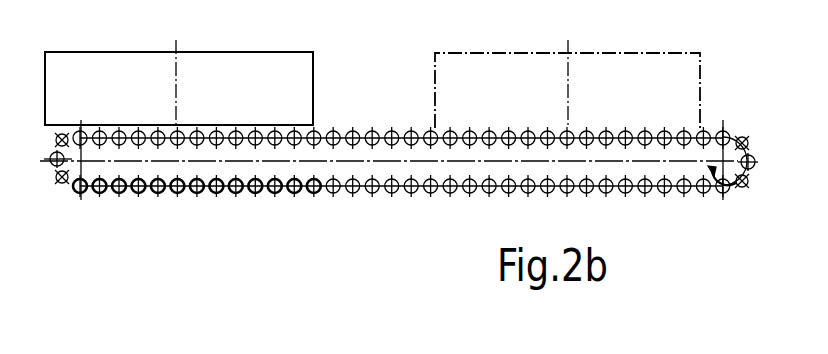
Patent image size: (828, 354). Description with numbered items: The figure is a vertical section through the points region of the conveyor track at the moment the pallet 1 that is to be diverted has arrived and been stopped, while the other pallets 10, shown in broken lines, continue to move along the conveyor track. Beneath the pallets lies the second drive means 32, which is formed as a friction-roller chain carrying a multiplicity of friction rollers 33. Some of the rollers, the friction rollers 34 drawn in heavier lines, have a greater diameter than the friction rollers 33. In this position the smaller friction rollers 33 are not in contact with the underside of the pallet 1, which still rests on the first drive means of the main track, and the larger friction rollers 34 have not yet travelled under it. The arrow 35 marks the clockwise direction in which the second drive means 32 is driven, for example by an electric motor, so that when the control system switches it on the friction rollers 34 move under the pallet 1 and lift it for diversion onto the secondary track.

The pallet 1 is at (265, 70).
The pallets 10 is at (655, 68).
The second drive means 32 is at (409, 184).
The friction rollers 33 is at (356, 129).
The friction rollers having greater diameter 34 is at (137, 194).
The arrow 35 is at (745, 187).